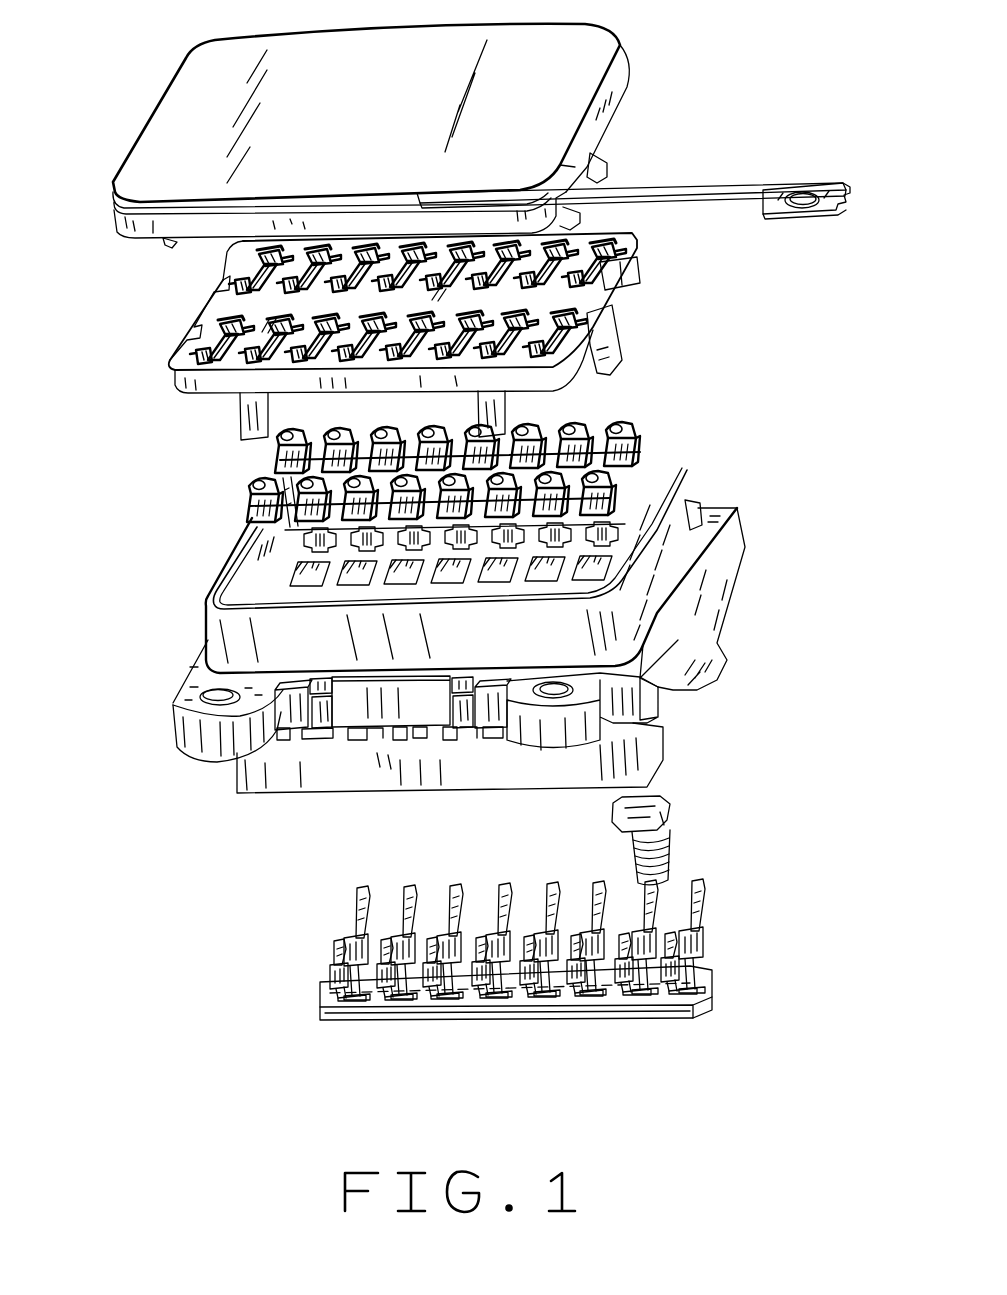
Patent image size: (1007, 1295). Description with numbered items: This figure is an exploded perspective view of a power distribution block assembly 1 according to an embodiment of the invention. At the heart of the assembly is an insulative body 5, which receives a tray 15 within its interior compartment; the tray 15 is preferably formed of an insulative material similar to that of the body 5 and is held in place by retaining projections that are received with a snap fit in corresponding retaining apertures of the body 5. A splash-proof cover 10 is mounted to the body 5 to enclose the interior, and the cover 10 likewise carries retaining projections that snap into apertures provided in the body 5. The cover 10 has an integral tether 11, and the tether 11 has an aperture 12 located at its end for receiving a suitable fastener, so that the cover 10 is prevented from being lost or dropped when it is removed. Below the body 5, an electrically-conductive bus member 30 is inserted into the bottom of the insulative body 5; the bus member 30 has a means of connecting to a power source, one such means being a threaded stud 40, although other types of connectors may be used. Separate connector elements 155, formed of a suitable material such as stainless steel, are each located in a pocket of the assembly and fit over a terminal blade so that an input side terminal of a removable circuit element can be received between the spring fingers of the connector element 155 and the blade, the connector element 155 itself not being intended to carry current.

The power distribution block assembly 1 is at (177, 538).
The insulative body 5 is at (740, 540).
The cover 10 is at (627, 79).
The tether 11 is at (687, 185).
The aperture 12 is at (803, 200).
The tray 15 is at (637, 275).
The connector element 155 is at (645, 425).
The electrically-conductive bus member 30 is at (423, 1007).
The threaded stud 40 is at (673, 800).